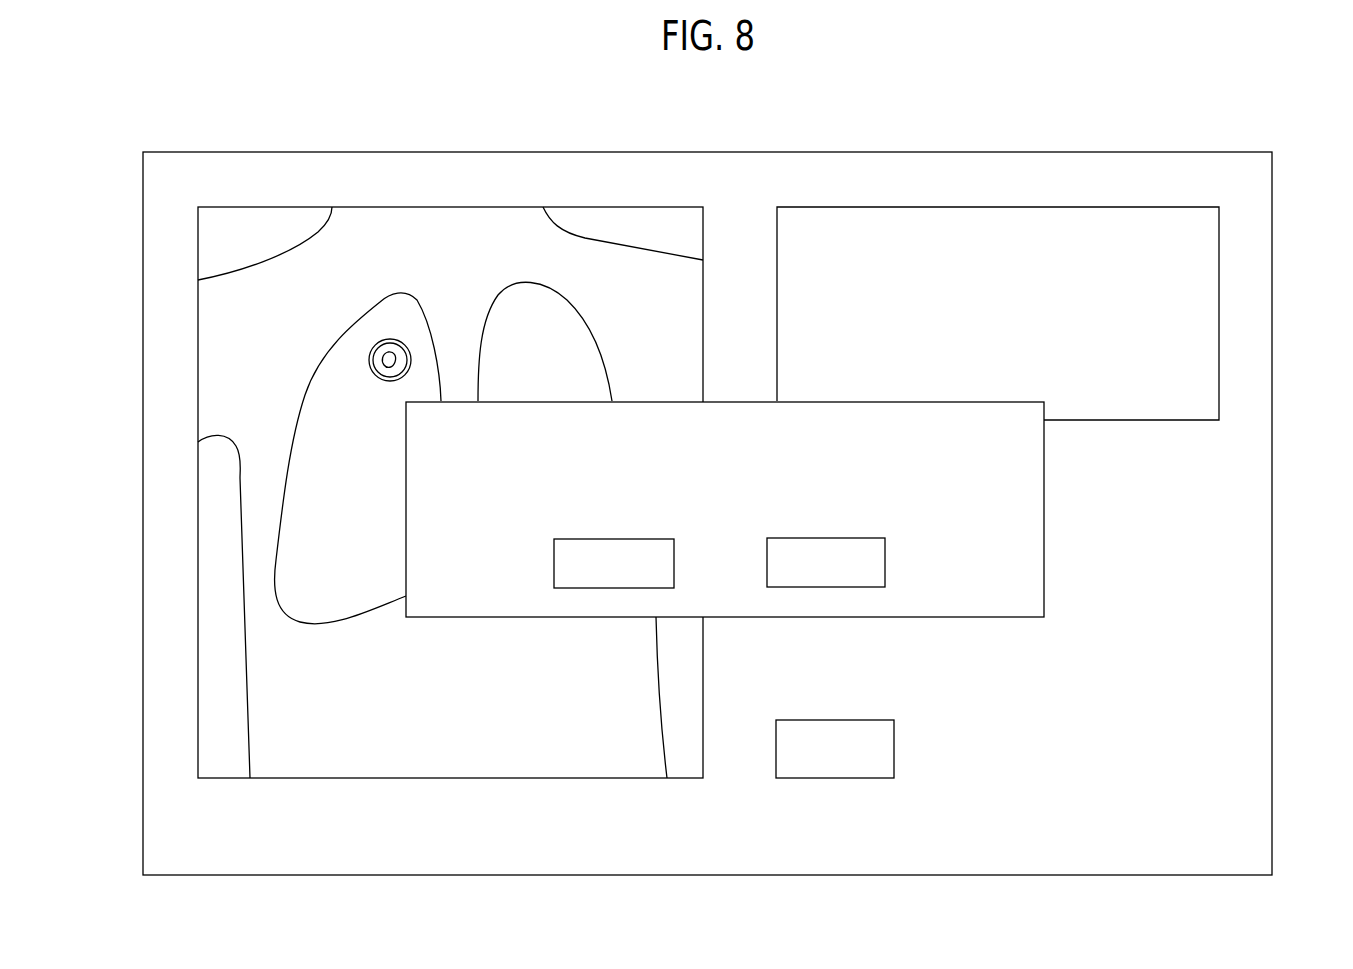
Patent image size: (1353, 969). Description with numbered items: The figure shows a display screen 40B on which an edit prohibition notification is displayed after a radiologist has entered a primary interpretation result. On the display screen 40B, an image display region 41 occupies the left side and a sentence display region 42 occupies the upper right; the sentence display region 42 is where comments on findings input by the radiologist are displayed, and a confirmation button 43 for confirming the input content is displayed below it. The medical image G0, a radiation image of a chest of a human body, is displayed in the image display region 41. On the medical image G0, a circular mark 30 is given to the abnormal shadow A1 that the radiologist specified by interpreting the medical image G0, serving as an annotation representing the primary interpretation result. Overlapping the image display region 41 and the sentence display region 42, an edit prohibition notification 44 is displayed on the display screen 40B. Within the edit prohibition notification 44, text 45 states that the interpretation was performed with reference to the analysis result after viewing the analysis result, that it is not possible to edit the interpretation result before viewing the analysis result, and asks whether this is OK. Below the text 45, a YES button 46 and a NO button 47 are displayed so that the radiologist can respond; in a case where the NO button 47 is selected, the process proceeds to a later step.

The display screen 40B is at (1176, 152).
The image display region 41 is at (628, 207).
The medical image G0 is at (680, 220).
The mark 30 is at (391, 338).
The abnormal shadow A1 is at (376, 357).
The sentence display region 42 is at (1219, 312).
The edit prohibition notification 44 is at (1044, 558).
The text 45 is at (1012, 444).
The YES button 46 is at (578, 588).
The NO button 47 is at (885, 568).
The confirmation button 43 is at (830, 778).